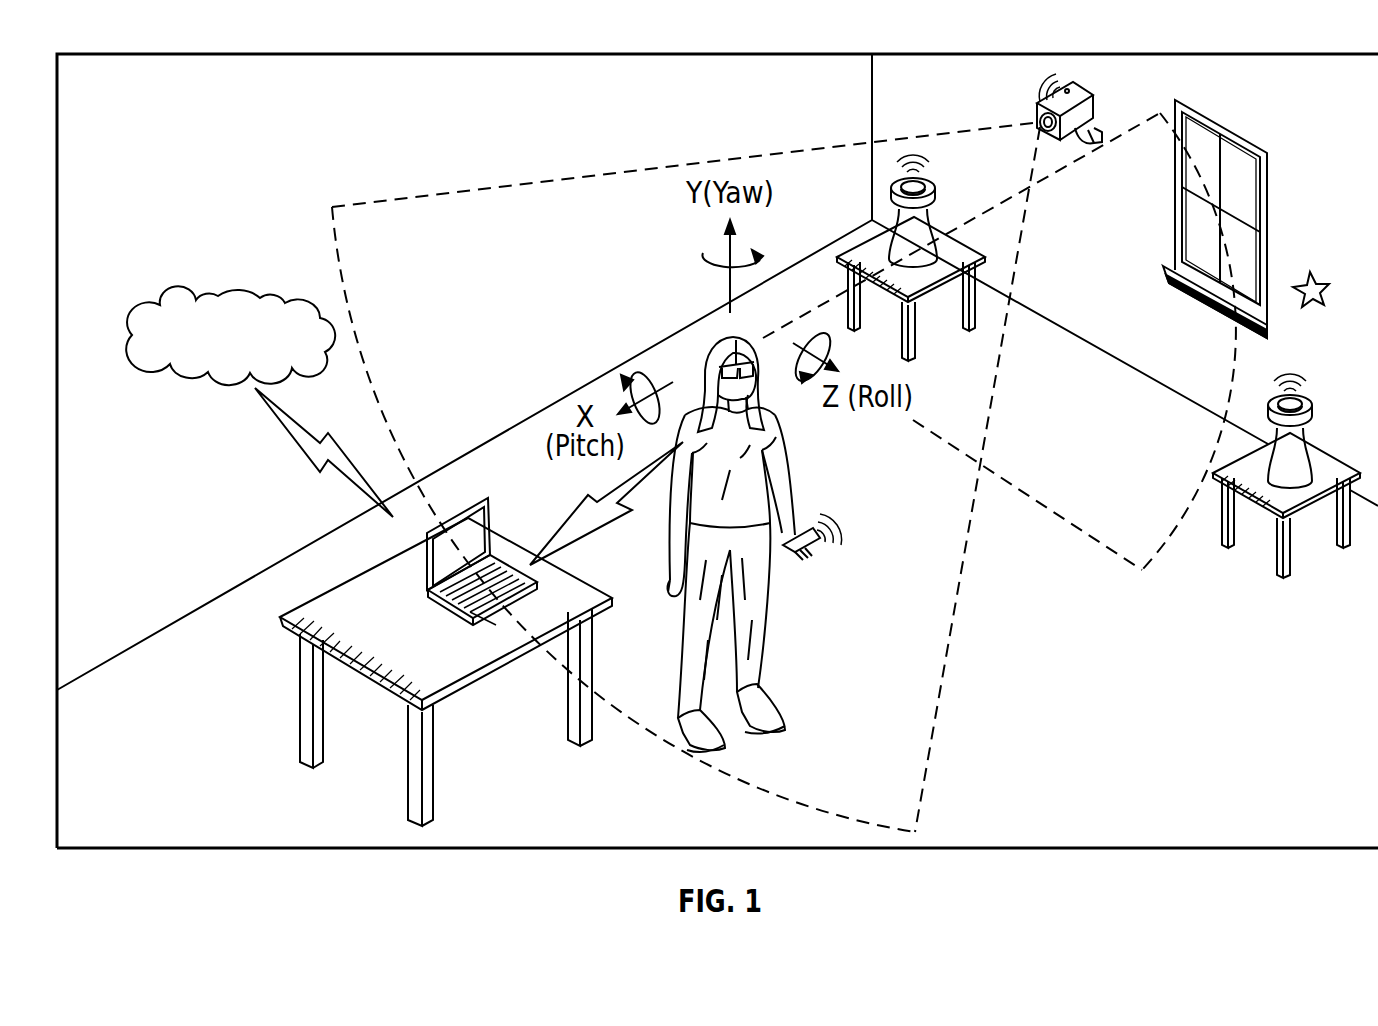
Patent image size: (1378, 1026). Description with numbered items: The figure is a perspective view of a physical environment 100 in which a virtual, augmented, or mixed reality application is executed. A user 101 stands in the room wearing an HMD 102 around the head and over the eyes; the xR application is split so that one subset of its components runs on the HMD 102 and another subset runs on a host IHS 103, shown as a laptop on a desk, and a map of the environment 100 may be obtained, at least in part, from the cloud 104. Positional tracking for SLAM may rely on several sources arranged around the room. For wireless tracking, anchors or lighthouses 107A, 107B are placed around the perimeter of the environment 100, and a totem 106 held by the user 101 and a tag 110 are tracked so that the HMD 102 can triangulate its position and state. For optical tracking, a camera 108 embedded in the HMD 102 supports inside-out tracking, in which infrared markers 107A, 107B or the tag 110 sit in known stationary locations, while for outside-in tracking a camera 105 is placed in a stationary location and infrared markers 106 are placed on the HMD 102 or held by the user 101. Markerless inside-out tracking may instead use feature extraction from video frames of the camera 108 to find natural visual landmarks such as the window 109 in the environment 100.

The physical environment 100 is at (127, 52).
The user 101 is at (760, 610).
The HMD 102 is at (760, 377).
The host IHS 103 is at (423, 552).
The cloud 104 is at (155, 305).
The camera 105 is at (1092, 103).
The totem 106 is at (812, 547).
The anchor or lighthouse 107A is at (933, 197).
The anchor or lighthouse 107B is at (1310, 413).
The camera 108 is at (744, 343).
The window 109 is at (1268, 178).
The tag 110 is at (1323, 283).